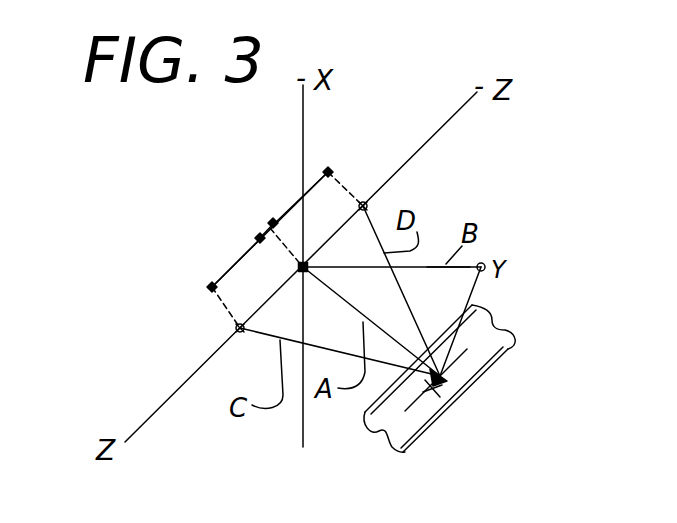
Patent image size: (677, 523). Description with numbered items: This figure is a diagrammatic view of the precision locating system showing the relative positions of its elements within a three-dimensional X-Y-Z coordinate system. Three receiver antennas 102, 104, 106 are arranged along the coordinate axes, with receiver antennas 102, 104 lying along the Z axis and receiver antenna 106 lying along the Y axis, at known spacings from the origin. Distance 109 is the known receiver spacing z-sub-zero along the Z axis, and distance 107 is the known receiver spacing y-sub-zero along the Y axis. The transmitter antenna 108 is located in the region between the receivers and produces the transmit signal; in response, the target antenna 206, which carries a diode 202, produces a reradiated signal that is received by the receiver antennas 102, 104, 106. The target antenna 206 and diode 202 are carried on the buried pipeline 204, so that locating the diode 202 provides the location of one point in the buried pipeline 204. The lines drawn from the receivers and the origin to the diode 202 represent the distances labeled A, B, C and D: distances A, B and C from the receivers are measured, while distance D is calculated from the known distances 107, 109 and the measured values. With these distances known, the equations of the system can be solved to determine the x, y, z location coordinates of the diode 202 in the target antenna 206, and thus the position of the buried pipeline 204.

The receiver antenna 102 is at (353, 201).
The receiver antenna 104 is at (237, 329).
The receiver antenna 106 is at (482, 264).
The distance 107 is at (472, 305).
The transmitter antenna 108 is at (262, 258).
The distance 109 is at (283, 205).
The diode 202 is at (450, 390).
The buried pipeline 204 is at (430, 430).
The target antenna 206 is at (467, 350).